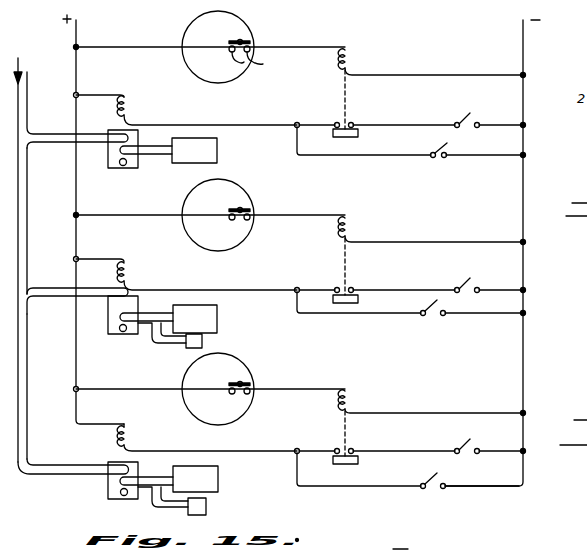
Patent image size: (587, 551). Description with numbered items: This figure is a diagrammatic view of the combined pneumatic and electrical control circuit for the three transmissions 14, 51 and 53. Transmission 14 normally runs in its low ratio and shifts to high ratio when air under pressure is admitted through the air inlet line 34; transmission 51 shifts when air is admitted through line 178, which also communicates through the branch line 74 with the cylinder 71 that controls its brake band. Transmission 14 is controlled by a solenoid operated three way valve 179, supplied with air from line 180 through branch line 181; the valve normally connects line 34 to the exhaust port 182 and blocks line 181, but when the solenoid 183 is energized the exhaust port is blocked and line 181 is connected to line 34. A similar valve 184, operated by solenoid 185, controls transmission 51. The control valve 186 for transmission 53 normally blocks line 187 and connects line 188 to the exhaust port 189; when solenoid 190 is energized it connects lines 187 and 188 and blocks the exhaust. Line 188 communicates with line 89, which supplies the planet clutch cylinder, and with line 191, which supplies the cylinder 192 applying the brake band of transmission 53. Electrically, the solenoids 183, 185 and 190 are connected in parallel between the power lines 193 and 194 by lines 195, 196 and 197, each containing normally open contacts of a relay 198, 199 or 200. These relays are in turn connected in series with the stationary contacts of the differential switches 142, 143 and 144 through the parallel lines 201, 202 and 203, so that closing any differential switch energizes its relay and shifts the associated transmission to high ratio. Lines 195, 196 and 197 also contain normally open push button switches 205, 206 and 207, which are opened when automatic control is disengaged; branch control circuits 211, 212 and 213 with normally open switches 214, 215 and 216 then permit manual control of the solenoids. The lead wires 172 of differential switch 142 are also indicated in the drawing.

The transmission 14 is at (217, 149).
The air inlet line 34 is at (160, 156).
The transmission 51 is at (207, 322).
The transmission 53 is at (212, 478).
The cylinder 71 is at (203, 343).
The branch line 74 is at (161, 345).
The line 89 is at (165, 477).
The differential switch 142 is at (252, 34).
The differential switch 143 is at (252, 194).
The differential switch 144 is at (249, 371).
The lamp lead wires 172 is at (258, 64).
The line 178 is at (158, 307).
The three way valve 179 is at (111, 168).
The line 180 is at (28, 109).
The branch line 181 is at (66, 121).
The exhaust port 182 is at (124, 167).
The solenoid 183 is at (130, 106).
The valve 184 is at (113, 333).
The solenoid 185 is at (130, 274).
The control valve 186 is at (112, 478).
The line 187 is at (68, 465).
The line 188 is at (148, 485).
The exhaust port 189 is at (112, 492).
The solenoid 190 is at (131, 439).
The line 191 is at (165, 502).
The cylinder 192 is at (205, 507).
The electric power line 193 is at (82, 27).
The electric power line 194 is at (530, 48).
The line 195 is at (405, 125).
The line 196 is at (382, 292).
The line 197 is at (385, 452).
The relay 198 is at (351, 55).
The relay 199 is at (352, 222).
The relay 200 is at (352, 398).
The line 201 is at (448, 75).
The line 202 is at (405, 242).
The line 203 is at (400, 413).
The switch 205 is at (469, 122).
The switch 206 is at (467, 288).
The switch 207 is at (462, 448).
The branch control circuit 211 is at (400, 156).
The branch control circuit 212 is at (386, 315).
The branch control circuit 213 is at (372, 487).
The switch 214 is at (450, 151).
The switch 215 is at (436, 313).
The switch 216 is at (443, 466).